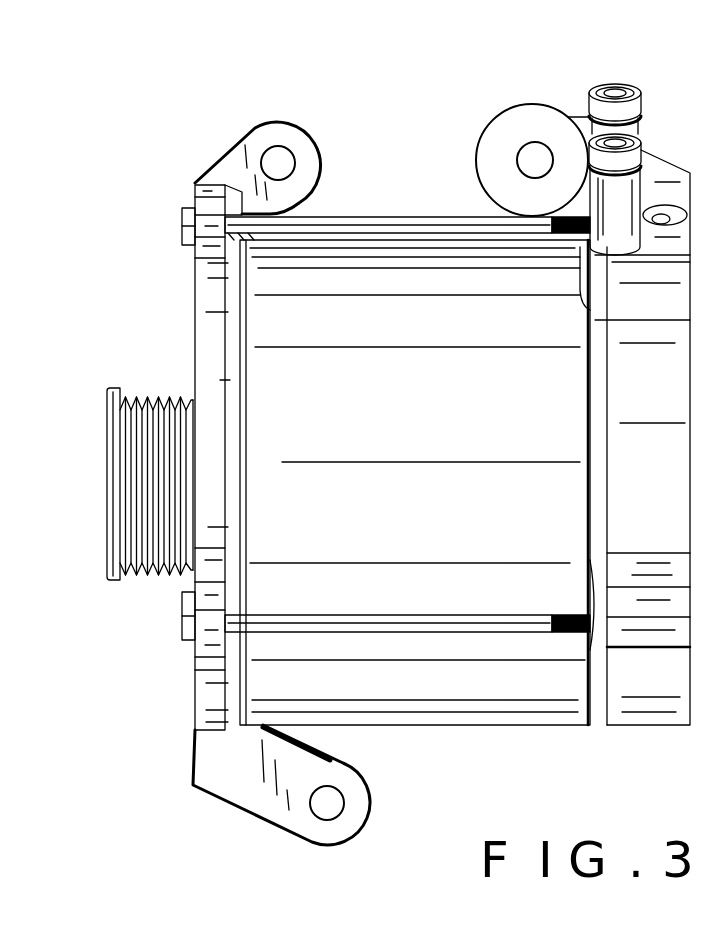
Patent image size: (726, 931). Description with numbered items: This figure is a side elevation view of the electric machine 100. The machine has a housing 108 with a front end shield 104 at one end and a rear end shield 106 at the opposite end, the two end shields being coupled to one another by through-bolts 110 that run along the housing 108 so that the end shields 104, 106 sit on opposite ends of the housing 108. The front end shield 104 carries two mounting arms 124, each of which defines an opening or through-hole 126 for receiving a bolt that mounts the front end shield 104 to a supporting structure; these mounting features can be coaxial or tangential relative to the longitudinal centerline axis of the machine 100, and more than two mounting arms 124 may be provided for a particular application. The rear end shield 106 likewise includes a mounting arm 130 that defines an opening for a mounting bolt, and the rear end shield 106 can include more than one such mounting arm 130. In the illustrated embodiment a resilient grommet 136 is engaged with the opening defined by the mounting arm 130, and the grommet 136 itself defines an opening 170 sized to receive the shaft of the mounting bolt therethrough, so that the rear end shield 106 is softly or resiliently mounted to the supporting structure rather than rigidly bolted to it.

The electric machine 100 is at (220, 78).
The front end shield 104 is at (193, 700).
The rear end shield 106 is at (653, 722).
The housing 108 is at (508, 725).
The through-bolts 110 is at (418, 216).
The mounting arms 124 is at (258, 122).
The through-hole 126 is at (282, 147).
The mounting arm 130 is at (578, 117).
The resilient grommet 136 is at (483, 128).
The opening 170 is at (535, 157).